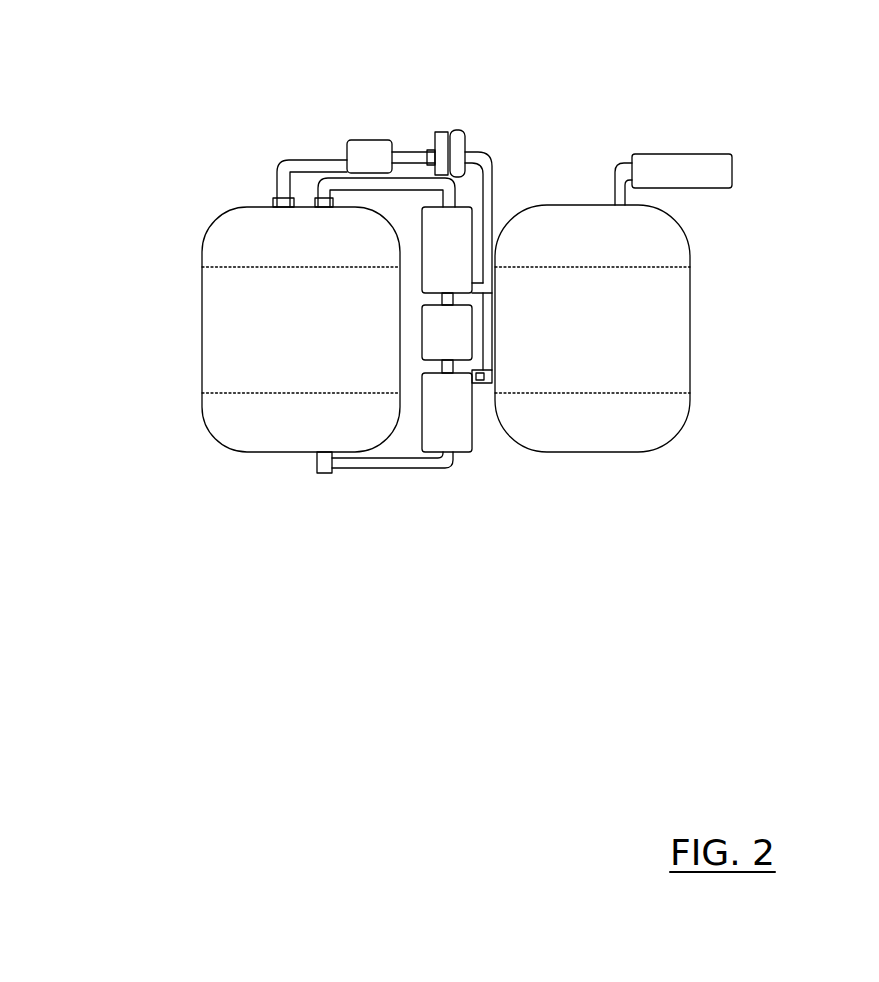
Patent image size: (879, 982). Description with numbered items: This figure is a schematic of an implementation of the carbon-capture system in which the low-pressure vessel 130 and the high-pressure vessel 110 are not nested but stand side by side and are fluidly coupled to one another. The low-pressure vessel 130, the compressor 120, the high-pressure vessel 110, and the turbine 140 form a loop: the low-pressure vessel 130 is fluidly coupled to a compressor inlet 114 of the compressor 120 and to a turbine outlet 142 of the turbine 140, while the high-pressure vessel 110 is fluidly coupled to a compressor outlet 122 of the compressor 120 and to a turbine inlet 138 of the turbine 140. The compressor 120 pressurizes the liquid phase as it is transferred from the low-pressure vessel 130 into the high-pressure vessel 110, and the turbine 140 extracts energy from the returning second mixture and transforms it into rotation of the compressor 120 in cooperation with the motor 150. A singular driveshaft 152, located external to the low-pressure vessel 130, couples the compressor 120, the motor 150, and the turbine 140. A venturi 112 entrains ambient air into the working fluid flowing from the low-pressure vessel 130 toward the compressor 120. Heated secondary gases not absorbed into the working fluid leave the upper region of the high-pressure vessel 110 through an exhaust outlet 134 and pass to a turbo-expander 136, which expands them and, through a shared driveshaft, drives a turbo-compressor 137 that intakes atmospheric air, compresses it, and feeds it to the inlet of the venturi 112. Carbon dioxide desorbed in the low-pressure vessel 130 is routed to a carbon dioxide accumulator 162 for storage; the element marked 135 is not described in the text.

The high-pressure vessel 110 is at (202, 267).
The venturi 112 is at (491, 166).
The compressor inlet 114 is at (488, 290).
The compressor 120 is at (421, 290).
The compressor outlet 122 is at (365, 182).
The low-pressure vessel 130 is at (692, 300).
The exhaust outlet 134 is at (287, 172).
The pump 135 is at (347, 141).
The turbo-expander 136 is at (447, 131).
The turbo-compressor 137 is at (458, 130).
The turbine inlet 138 is at (385, 468).
The turbine 140 is at (472, 453).
The turbine outlet 142 is at (490, 378).
The motor 150 is at (478, 380).
The driveshaft 152 is at (450, 367).
The carbon dioxide accumulator 162 is at (697, 153).